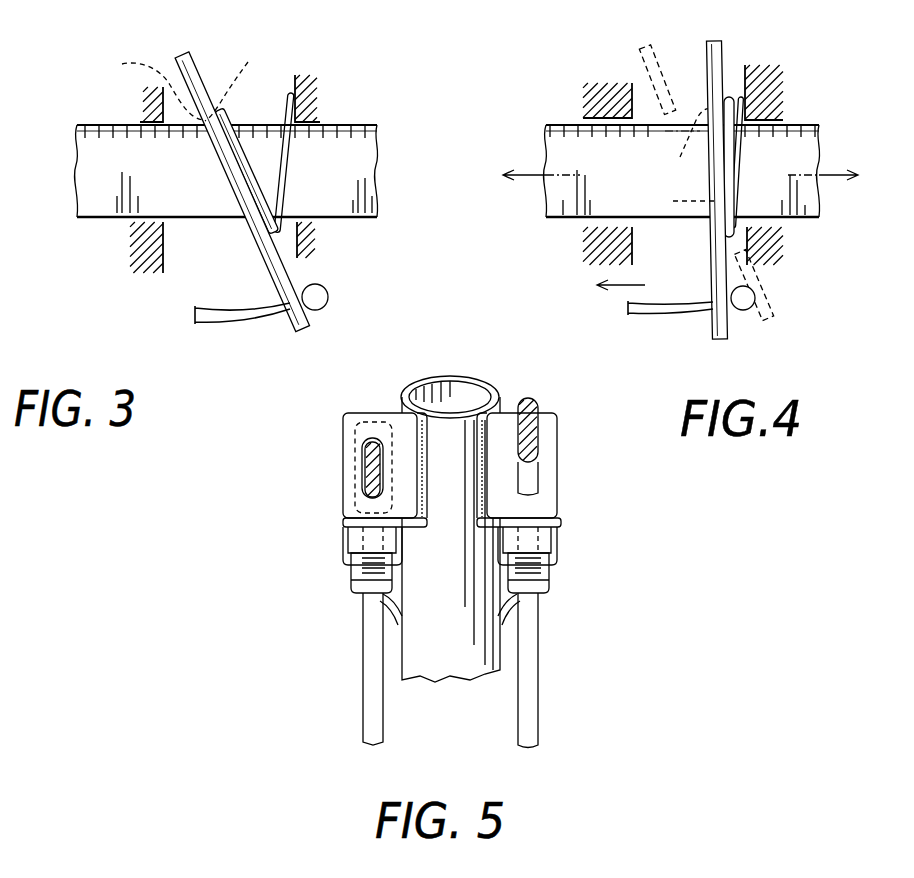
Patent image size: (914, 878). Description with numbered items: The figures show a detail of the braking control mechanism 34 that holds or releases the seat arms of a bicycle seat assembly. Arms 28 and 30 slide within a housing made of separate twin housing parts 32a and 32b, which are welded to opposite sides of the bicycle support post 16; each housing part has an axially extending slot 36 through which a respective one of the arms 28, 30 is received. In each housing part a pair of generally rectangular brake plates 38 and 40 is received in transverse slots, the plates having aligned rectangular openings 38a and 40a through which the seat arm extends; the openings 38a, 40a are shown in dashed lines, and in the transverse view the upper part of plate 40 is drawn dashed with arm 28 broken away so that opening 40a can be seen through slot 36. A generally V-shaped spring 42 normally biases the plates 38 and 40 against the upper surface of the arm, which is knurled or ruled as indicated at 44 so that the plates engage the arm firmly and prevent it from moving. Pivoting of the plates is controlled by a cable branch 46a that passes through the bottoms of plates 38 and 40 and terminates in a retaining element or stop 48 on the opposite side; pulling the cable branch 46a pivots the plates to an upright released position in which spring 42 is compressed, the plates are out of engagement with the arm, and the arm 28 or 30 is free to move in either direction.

In FIG. 5, the bicycle support post 16 is at (441, 670).
In FIG. 3, the seat arm 28 is at (350, 158).
In FIG. 4, the seat arm 28 is at (803, 157).
In FIG. 5, the seat arm 28 is at (365, 705).
In FIG. 5, the seat arm 30 is at (530, 715).
In FIG. 3, the housing part 32a is at (122, 261).
In FIG. 4, the housing part 32a is at (567, 4).
In FIG. 5, the housing part 32a is at (343, 426).
In FIG. 5, the housing part 32b is at (557, 433).
In FIG. 4, the braking control mechanism 34 is at (478, 0).
In FIG. 5, the axially extending slot 36 is at (366, 485).
In FIG. 3, the brake plate 38 is at (271, 270).
In FIG. 4, the brake plate 38 is at (712, 333).
In FIG. 5, the brake plate 38 is at (365, 600).
In FIG. 3, the rectangular opening 38a is at (140, 83).
In FIG. 4, the rectangular opening 38a is at (700, 183).
In FIG. 3, the brake plate 40 is at (298, 268).
In FIG. 4, the brake plate 40 is at (726, 335).
In FIG. 5, the brake plate 40 is at (370, 425).
In FIG. 3, the rectangular opening 40a is at (247, 77).
In FIG. 4, the rectangular opening 40a is at (670, 198).
In FIG. 5, the rectangular opening 40a is at (366, 450).
In FIG. 3, the V-shaped spring 42 is at (283, 186).
In FIG. 4, the V-shaped spring 42 is at (732, 97).
In FIG. 3, the knurled upper surface 44 is at (335, 125).
In FIG. 4, the knurled upper surface 44 is at (803, 127).
In FIG. 3, the cable branch 46a is at (236, 323).
In FIG. 4, the cable branch 46a is at (636, 313).
In FIG. 3, the retaining element or stop 48 is at (326, 308).
In FIG. 4, the retaining element or stop 48 is at (754, 296).